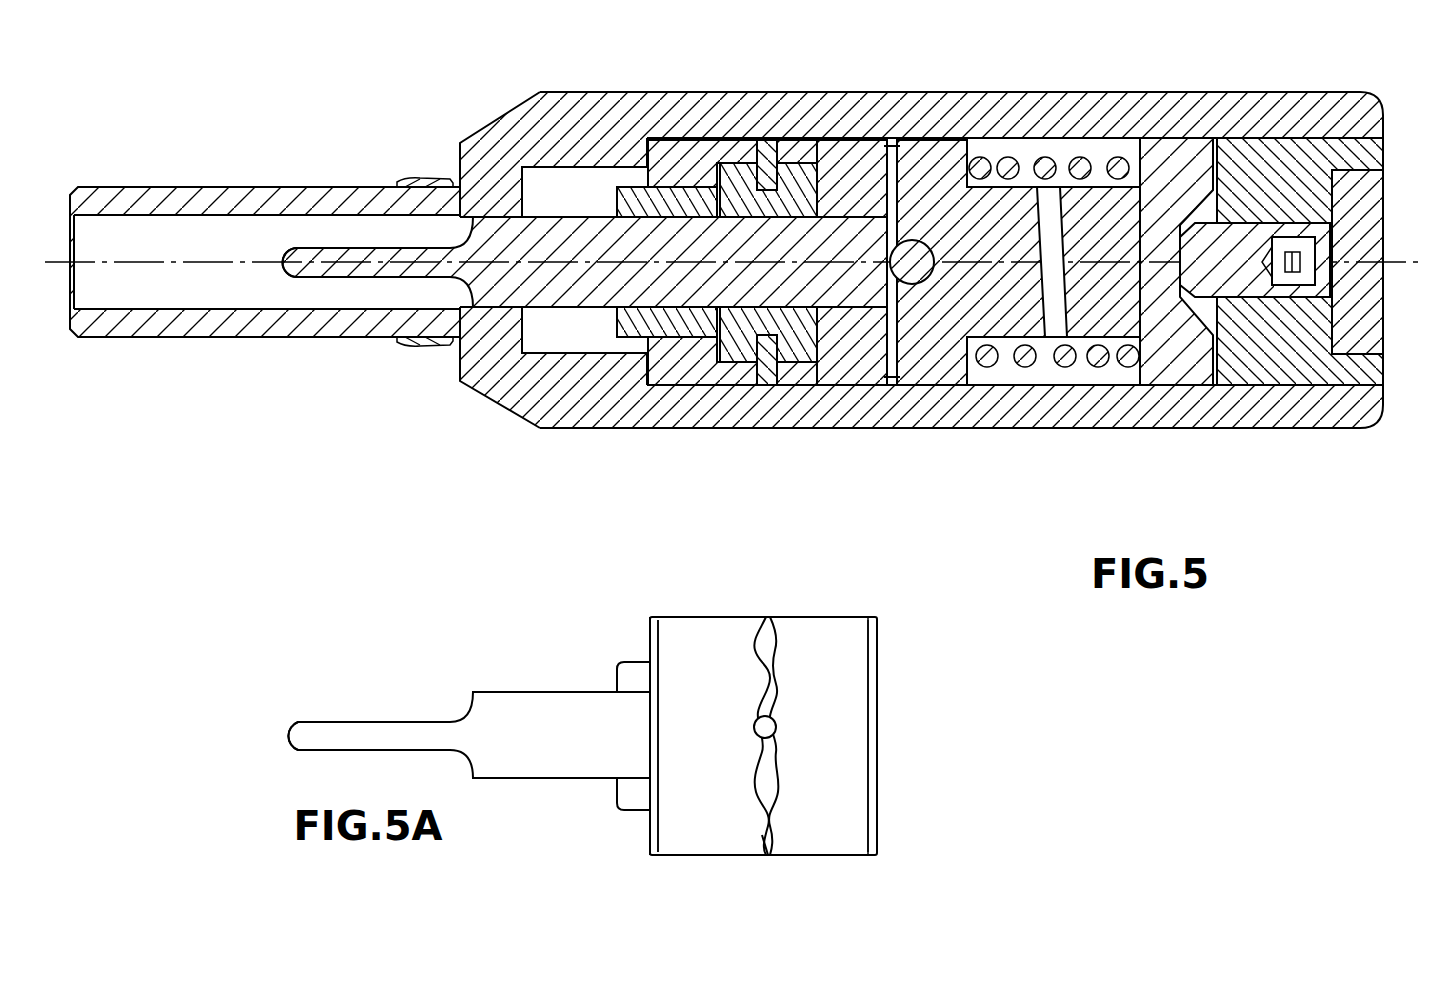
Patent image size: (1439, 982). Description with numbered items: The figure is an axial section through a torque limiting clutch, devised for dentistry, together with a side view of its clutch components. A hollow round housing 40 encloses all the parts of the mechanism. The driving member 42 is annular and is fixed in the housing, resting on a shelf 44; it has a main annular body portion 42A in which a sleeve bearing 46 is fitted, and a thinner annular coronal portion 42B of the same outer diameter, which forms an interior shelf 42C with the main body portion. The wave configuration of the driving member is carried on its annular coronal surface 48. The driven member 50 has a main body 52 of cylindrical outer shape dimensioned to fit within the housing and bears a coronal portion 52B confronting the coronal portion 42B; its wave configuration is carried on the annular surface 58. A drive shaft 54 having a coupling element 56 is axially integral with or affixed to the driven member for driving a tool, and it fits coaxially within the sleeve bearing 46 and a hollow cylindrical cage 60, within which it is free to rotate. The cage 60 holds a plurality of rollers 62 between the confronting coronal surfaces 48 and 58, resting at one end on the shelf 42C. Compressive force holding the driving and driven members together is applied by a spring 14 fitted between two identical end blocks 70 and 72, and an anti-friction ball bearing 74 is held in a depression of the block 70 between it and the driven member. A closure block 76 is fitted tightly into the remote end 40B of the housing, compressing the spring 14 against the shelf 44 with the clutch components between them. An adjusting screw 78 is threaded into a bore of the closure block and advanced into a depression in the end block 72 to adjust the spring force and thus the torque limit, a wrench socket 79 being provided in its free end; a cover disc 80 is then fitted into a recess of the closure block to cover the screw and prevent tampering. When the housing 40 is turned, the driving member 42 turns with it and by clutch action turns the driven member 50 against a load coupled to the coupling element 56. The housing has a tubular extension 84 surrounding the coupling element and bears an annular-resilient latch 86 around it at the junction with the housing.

In FIG. 5, the spring 14 is at (1063, 360).
In FIG. 5, the housing 40 is at (933, 430).
In FIG. 5, the remote end of the housing 40B is at (1335, 385).
In FIG. 5, the driving member 42 is at (685, 372).
In FIG. 5A, the driving member 42 is at (735, 612).
In FIG. 5, the main annular body portion 42A is at (685, 160).
In FIG. 5A, the main annular body portion 42A is at (705, 642).
In FIG. 5, the coronal portion 42B is at (750, 165).
In FIG. 5A, the coronal portion 42B is at (752, 613).
In FIG. 5, the interior shelf 42C is at (703, 170).
In FIG. 5, the shelf 44 is at (640, 190).
In FIG. 5, the sleeve bearing 46 is at (523, 390).
In FIG. 5A, the sleeve bearing 46 is at (633, 675).
In FIG. 5A, the annular coronal surface 48 is at (770, 853).
In FIG. 5A, the driven member 50 is at (843, 615).
In FIG. 5A, the main body 52 is at (848, 793).
In FIG. 5A, the coronal portion 52B is at (803, 855).
In FIG. 5, the drive shaft 54 is at (572, 215).
In FIG. 5A, the drive shaft 54 is at (537, 700).
In FIG. 5, the coupling element 56 is at (298, 277).
In FIG. 5A, the coupling element 56 is at (296, 720).
In FIG. 5A, the annular surface 58 is at (763, 620).
In FIG. 5, the cage 60 is at (815, 168).
In FIG. 5, the rollers 62 is at (768, 373).
In FIG. 5A, the rollers 62 is at (767, 727).
In FIG. 5, the end block 70 is at (967, 187).
In FIG. 5, the end block 72 is at (1168, 160).
In FIG. 5, the anti-friction ball bearing 74 is at (925, 245).
In FIG. 5, the closure block 76 is at (1300, 150).
In FIG. 5, the adjusting screw 78 is at (1240, 225).
In FIG. 5, the wrench socket 79 is at (1300, 290).
In FIG. 5, the cover disc 80 is at (1362, 175).
In FIG. 5, the tubular extension 84 is at (270, 195).
In FIG. 5, the annular-resilient latch 86 is at (420, 180).